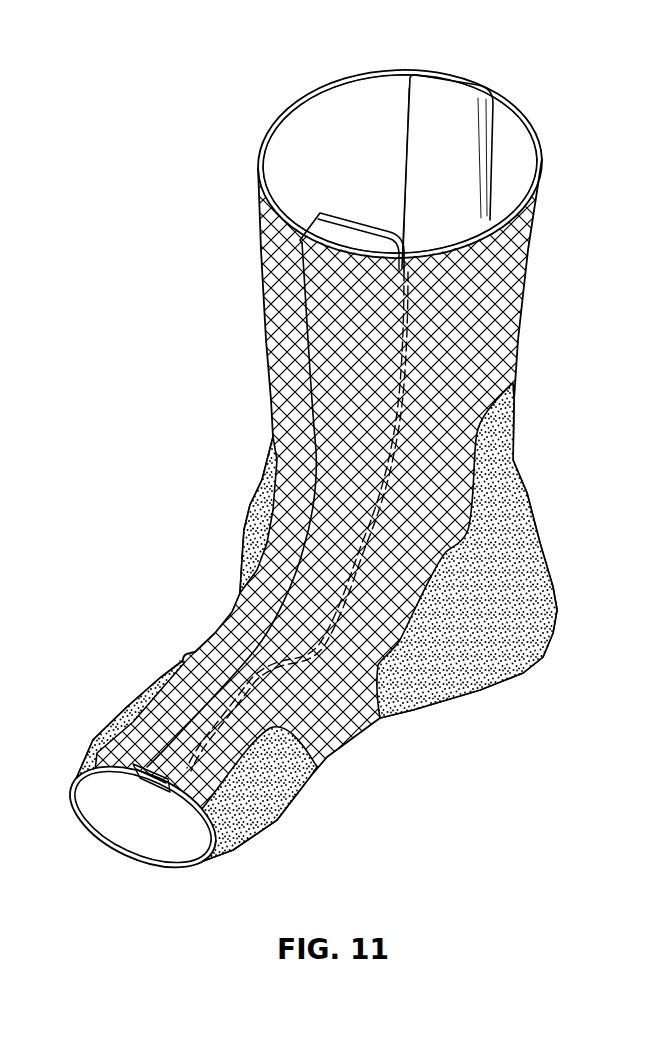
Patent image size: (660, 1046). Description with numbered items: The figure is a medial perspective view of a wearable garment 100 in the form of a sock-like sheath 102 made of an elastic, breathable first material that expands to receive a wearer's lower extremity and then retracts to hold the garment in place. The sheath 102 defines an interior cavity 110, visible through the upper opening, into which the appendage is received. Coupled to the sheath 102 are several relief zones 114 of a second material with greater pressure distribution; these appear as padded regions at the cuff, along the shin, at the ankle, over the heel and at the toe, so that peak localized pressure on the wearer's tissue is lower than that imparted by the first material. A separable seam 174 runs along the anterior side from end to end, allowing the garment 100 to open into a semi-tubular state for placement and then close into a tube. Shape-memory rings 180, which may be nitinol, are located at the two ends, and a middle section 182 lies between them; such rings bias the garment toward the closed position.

The wearable garment 100 is at (327, 476).
The sheath 102 is at (490, 315).
The cavity 110 is at (356, 142).
The relief zones 114 is at (462, 90).
The separable seam 174 is at (333, 372).
The shape-memory rings 180 is at (258, 169).
The middle section 182 is at (322, 553).